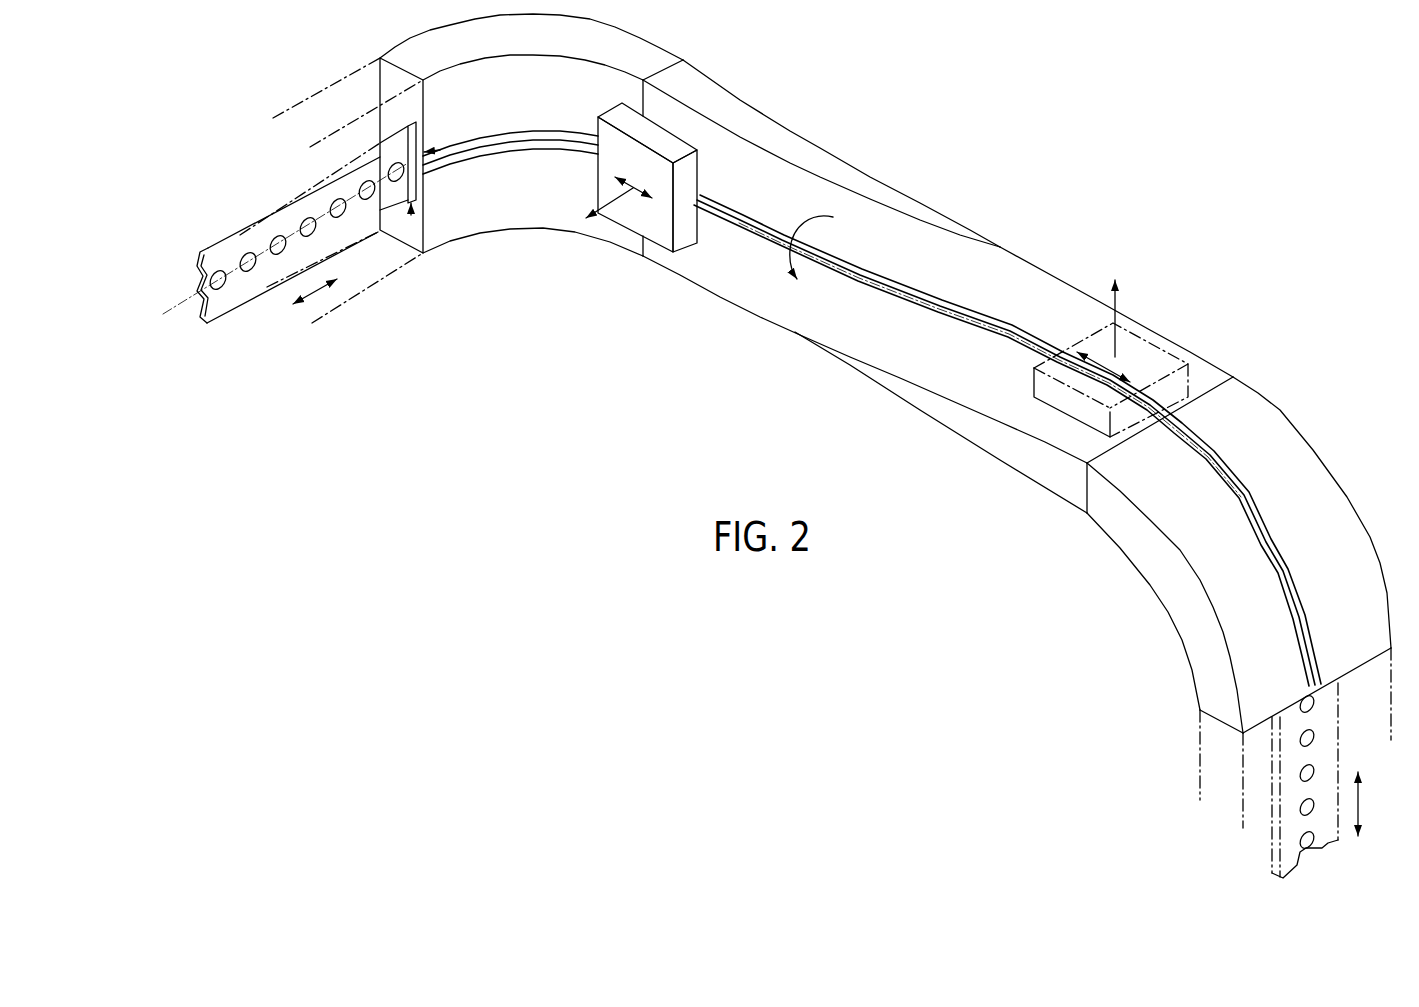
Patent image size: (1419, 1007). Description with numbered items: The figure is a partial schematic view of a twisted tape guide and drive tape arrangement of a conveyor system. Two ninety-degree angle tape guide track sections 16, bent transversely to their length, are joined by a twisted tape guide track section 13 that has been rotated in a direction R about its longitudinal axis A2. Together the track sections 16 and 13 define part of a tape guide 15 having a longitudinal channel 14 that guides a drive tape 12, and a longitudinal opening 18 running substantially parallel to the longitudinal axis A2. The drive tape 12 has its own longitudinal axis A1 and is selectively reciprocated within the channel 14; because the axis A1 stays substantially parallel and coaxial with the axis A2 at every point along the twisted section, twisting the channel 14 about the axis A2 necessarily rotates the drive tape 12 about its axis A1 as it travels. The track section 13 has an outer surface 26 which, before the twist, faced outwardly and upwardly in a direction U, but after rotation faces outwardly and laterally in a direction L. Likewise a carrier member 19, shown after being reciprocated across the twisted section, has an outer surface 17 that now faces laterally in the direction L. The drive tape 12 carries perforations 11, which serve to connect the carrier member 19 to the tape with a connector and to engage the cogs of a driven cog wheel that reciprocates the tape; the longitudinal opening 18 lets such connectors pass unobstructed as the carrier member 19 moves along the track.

The drive tape perforations 11 is at (248, 258).
The drive tape 12 is at (220, 316).
The twisted tape guide track section 13 is at (922, 413).
The longitudinal channel 14 is at (432, 152).
The tape guide 15 is at (411, 215).
The tape guide track sections 16 is at (543, 224).
The outer surface of carrier member 17 is at (664, 233).
The longitudinal opening 18 is at (1292, 552).
The carrier member 19 is at (686, 178).
The outer surface 26 is at (993, 270).
The longitudinal axis of drive tape A1 is at (168, 312).
The longitudinal axis of guide track A2 is at (945, 305).
The lateral direction L is at (598, 213).
The direction of rotation R is at (802, 238).
The upward direction U is at (1115, 309).